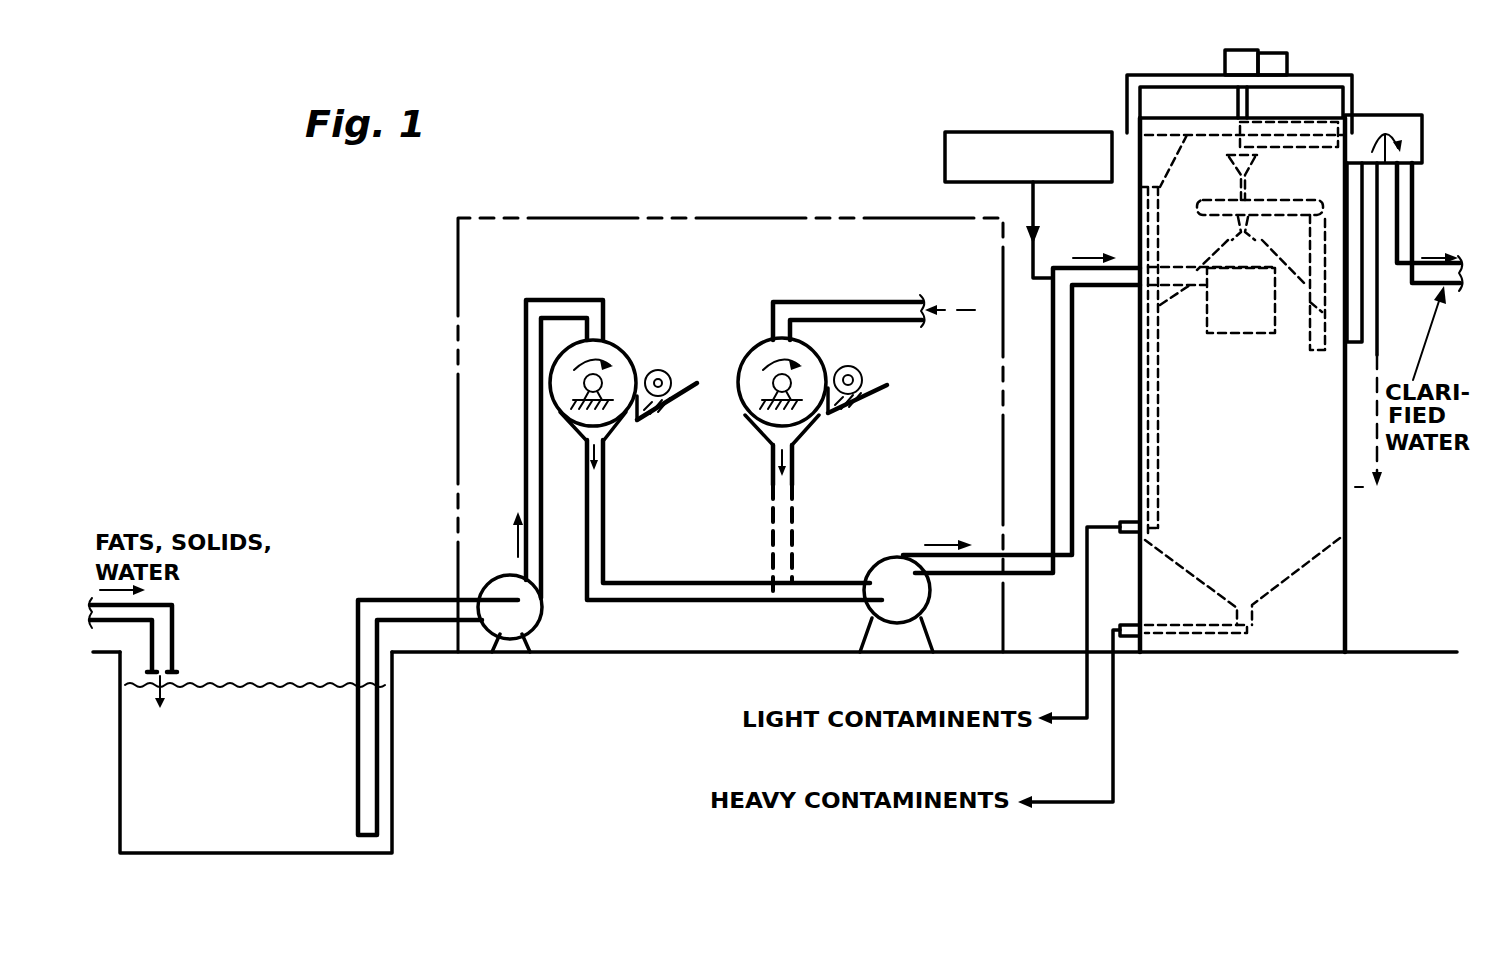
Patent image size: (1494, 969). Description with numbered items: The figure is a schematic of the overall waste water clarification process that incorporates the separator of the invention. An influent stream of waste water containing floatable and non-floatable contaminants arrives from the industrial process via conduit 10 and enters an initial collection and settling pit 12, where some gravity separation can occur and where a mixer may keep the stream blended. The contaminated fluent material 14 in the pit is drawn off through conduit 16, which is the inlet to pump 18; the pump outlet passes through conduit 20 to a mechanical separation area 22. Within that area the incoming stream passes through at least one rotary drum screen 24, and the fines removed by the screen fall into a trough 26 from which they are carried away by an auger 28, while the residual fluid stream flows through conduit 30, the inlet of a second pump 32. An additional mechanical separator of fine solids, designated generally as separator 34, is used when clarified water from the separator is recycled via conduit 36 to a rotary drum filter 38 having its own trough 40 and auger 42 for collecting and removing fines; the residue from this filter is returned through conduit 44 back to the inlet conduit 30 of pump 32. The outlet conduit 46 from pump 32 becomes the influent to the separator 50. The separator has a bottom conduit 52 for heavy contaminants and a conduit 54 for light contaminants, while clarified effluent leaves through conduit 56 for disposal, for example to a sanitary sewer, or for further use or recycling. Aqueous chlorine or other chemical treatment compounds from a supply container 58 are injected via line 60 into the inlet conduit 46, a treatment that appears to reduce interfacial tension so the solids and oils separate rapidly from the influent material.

The conduit 10 is at (173, 627).
The settling pit 12 is at (325, 855).
The contaminated fluent material 14 is at (322, 808).
The conduit 16 is at (396, 603).
The pump 18 is at (503, 578).
The conduit 20 is at (533, 451).
The mechanical separation area 22 is at (792, 218).
The rotary drum screen 24 is at (612, 350).
The trough 26 is at (648, 406).
The auger 28 is at (655, 372).
The conduit 30 is at (597, 508).
The second pump 32 is at (928, 607).
The mechanical separator 34 is at (838, 412).
The conduit 36 is at (852, 300).
The rotary drum filter 38 is at (815, 362).
The trough 40 is at (842, 412).
The auger 42 is at (862, 382).
The conduit 44 is at (795, 492).
The outlet conduit 46 is at (1065, 437).
The separator 50 is at (1348, 567).
The bottom conduit 52 is at (1115, 748).
The conduit 54 is at (1087, 683).
The conduit 56 is at (1405, 200).
The supply container 58 is at (1052, 130).
The line 60 is at (1036, 215).